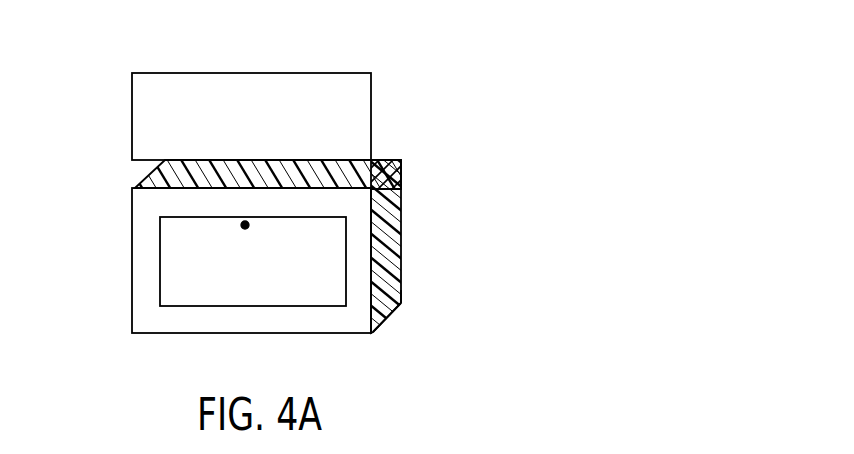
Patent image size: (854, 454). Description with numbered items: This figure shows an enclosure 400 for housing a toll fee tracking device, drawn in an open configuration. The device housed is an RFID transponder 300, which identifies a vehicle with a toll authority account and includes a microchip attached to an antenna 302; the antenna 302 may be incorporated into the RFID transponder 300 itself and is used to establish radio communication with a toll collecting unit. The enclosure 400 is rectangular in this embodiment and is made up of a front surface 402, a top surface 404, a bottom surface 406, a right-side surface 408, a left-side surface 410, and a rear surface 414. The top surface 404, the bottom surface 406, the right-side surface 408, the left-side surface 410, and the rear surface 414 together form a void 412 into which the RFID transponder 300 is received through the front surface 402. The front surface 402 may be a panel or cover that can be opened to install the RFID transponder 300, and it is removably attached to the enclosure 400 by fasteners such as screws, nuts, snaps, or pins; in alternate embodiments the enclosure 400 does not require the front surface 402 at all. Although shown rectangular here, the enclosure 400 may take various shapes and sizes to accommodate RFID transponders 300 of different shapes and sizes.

The RFID transponder 300 is at (175, 303).
The antenna 302 is at (245, 225).
The enclosure 400 is at (422, 94).
The front surface 402 is at (183, 110).
The top surface 404 is at (382, 158).
The bottom surface 406 is at (350, 335).
The right-side surface 408 is at (394, 249).
The left-side surface 410 is at (133, 275).
The void 412 is at (401, 188).
The rear surface 414 is at (403, 288).